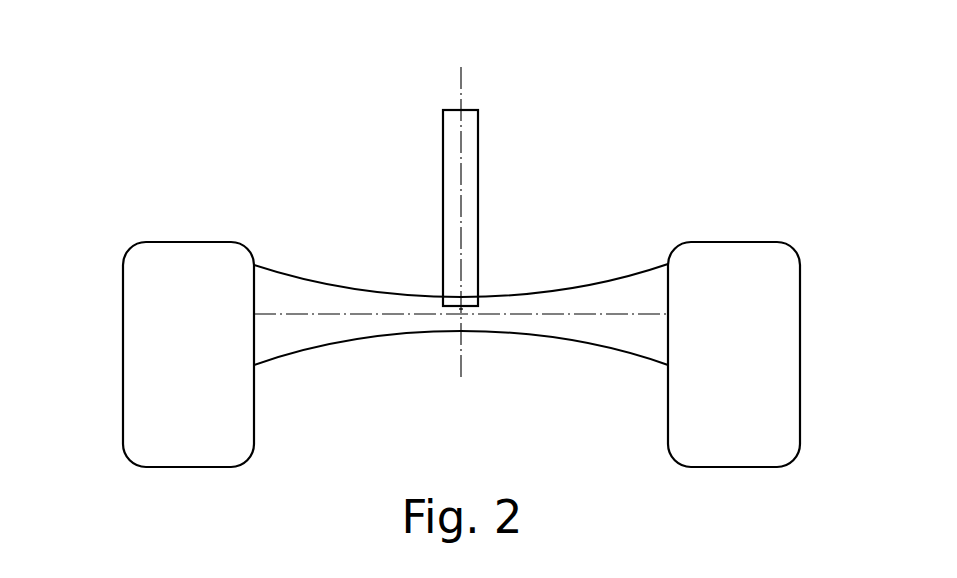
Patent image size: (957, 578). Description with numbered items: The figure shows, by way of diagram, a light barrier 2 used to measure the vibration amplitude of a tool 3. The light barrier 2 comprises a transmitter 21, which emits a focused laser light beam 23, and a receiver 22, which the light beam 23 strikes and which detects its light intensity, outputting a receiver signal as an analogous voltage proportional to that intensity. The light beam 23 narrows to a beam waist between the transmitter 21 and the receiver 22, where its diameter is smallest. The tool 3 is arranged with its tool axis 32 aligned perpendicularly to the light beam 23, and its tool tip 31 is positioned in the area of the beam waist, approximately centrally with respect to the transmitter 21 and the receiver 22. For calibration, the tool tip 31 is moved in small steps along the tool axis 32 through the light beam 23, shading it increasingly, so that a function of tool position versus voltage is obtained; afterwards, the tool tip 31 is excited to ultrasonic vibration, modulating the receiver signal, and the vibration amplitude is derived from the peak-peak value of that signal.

The light barrier 2 is at (119, 242).
The transmitter 21 is at (135, 337).
The receiver 22 is at (783, 337).
The light beam 23 is at (297, 332).
The tool 3 is at (468, 135).
The tool tip 31 is at (466, 307).
The tool axis 32 is at (462, 80).